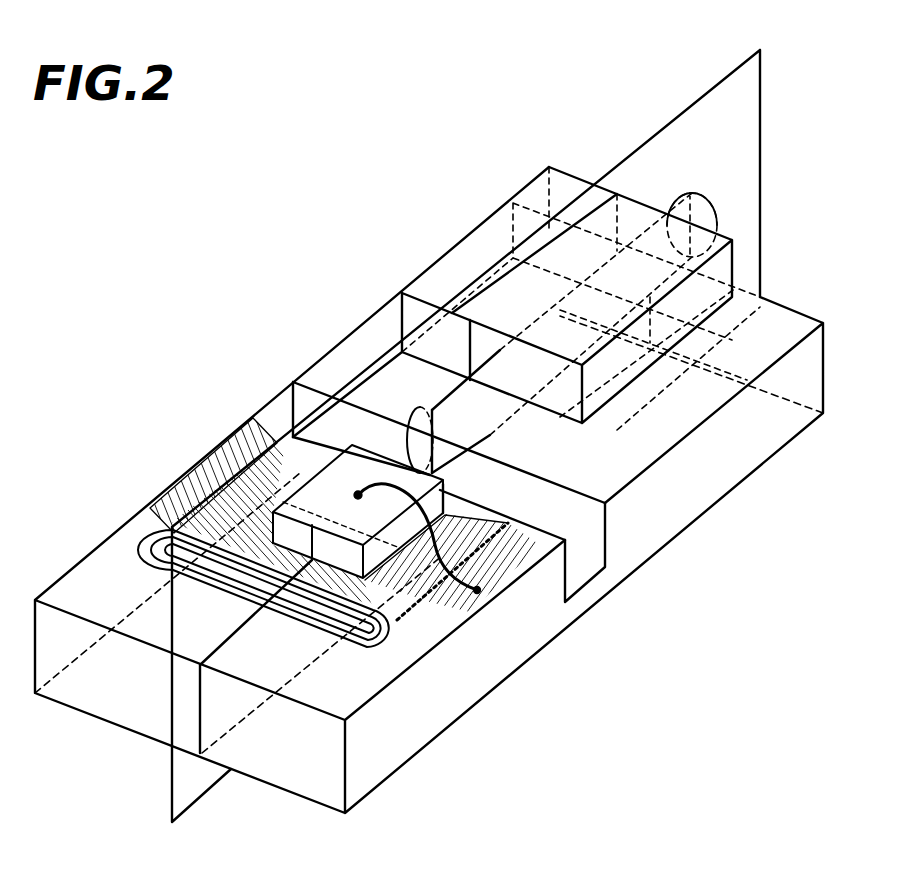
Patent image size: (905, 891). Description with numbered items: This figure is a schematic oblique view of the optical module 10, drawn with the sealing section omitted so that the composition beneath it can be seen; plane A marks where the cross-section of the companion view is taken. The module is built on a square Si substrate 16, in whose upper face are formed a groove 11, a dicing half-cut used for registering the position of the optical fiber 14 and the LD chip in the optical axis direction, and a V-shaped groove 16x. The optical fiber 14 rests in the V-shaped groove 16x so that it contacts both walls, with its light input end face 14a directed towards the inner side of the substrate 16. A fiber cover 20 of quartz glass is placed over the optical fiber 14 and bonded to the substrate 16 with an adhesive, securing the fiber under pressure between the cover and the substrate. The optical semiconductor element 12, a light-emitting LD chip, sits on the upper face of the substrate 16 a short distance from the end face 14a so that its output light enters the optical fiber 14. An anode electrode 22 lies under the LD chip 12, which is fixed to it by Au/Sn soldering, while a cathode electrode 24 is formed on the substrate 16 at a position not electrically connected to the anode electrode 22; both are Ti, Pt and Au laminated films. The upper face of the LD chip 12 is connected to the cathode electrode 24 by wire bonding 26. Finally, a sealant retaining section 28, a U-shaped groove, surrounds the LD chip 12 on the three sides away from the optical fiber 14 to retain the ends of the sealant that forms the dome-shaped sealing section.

The optical module 10 is at (630, 118).
The plane A is at (742, 123).
The groove 11 is at (588, 568).
The optical semiconductor element 12 is at (360, 443).
The optical fiber 14 is at (458, 452).
The end face 14a is at (403, 430).
The substrate 16 is at (64, 690).
The V-shaped groove 16x is at (610, 497).
The fiber cover 20 is at (565, 187).
The anode electrode 22 is at (207, 463).
The cathode electrode 24 is at (515, 580).
The wire bonding 26 is at (430, 603).
The sealant retaining section 28 is at (390, 627).